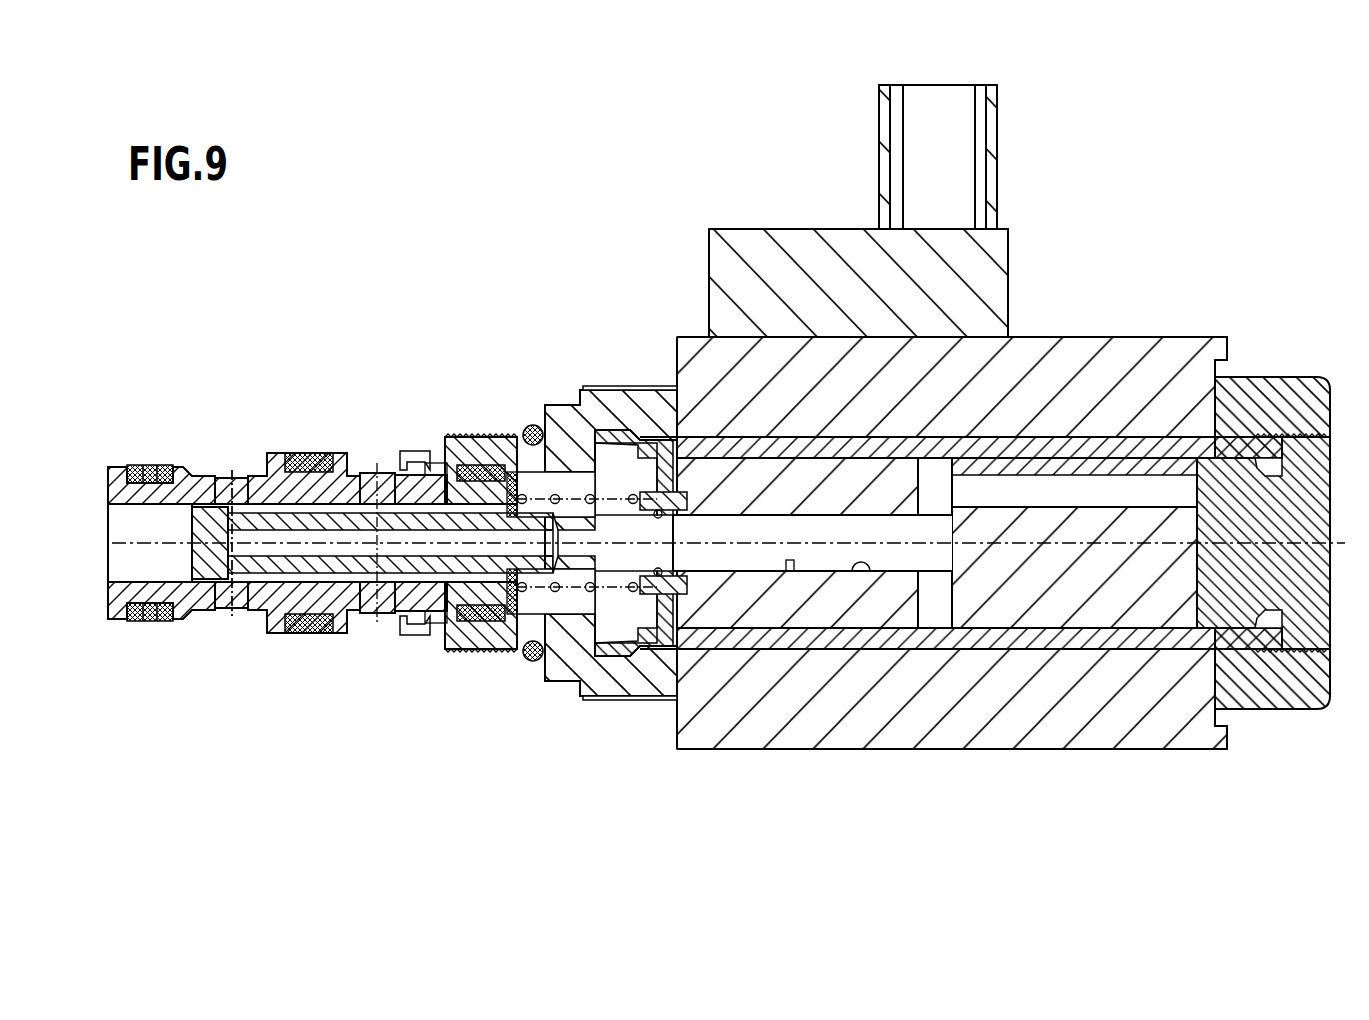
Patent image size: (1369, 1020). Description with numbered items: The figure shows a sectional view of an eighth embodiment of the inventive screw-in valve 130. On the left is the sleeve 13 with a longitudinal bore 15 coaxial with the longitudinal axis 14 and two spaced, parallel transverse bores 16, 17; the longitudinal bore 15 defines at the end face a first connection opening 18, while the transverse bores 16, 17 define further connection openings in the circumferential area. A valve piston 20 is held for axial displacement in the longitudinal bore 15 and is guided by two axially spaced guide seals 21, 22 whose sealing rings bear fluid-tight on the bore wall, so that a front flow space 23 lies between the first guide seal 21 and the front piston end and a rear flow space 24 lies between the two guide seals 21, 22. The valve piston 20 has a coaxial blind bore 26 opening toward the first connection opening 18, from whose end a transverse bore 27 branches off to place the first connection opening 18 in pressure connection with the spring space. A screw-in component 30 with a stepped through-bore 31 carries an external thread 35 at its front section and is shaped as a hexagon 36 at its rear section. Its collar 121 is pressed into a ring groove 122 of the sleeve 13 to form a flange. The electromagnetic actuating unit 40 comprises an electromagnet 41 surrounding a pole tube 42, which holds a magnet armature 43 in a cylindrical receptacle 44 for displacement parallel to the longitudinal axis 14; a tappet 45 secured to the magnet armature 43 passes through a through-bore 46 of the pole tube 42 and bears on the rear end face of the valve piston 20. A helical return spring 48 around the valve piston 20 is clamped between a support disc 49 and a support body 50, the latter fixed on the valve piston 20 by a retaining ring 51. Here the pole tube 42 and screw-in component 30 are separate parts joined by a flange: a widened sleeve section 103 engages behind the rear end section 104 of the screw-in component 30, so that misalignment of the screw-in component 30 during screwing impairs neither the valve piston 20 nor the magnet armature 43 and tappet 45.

The sleeve 13 is at (328, 438).
The longitudinal axis 14 is at (112, 543).
The longitudinal bore 15 is at (112, 578).
The transverse bore 16 is at (230, 610).
The transverse bore 17 is at (367, 620).
The first connection opening 18 is at (112, 522).
The valve piston 20 is at (268, 590).
The first guide seal 21 is at (230, 490).
The second guide seal 22 is at (455, 488).
The front flow space 23 is at (200, 590).
The rear flow space 24 is at (377, 490).
The blind bore 26 is at (195, 530).
The transverse bore 27 is at (560, 485).
The screw-in component 30 is at (598, 372).
The stepped through-bore 31 is at (450, 652).
The external thread 35 is at (462, 657).
The hexagon 36 is at (630, 386).
The electromagnetic actuating unit 40 is at (1074, 326).
The electromagnet 41 is at (1178, 348).
The pole tube 42 is at (1010, 430).
The magnet armature 43 is at (1085, 600).
The cylindrical receptacle 44 is at (957, 620).
The tappet 45 is at (790, 562).
The through-bore 46 is at (860, 568).
The helical return spring 48 is at (507, 655).
The support disc 49 is at (515, 472).
The support body 50 is at (700, 500).
The retaining ring 51 is at (673, 558).
The widened sleeve section 103 is at (626, 543).
The rear end section 104 is at (683, 440).
The collar 121 is at (420, 453).
The ring groove 122 is at (430, 463).
The screw-in valve 130 is at (937, 196).